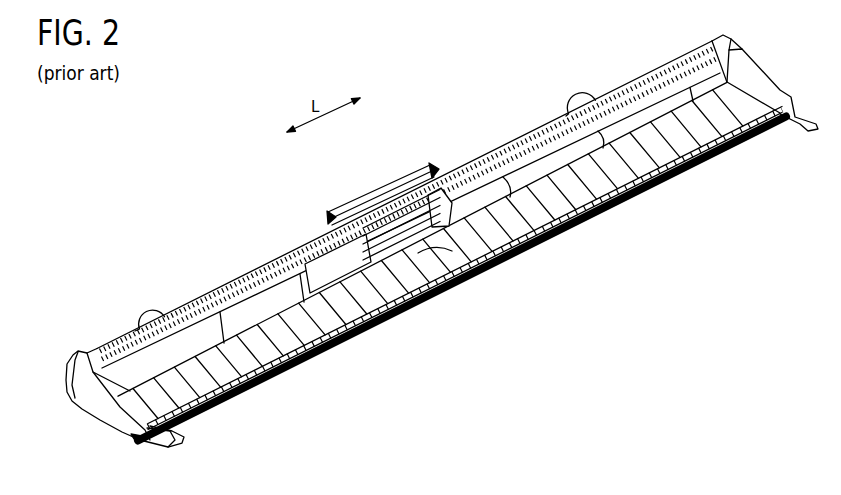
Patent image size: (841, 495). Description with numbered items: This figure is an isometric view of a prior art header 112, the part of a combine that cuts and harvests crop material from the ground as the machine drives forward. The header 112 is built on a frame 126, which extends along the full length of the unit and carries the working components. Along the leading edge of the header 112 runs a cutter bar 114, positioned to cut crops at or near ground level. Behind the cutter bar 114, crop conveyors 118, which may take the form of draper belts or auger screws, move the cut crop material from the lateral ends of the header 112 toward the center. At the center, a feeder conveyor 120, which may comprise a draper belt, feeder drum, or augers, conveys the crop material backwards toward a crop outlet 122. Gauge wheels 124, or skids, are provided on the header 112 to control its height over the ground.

The header 112 is at (206, 185).
The cutter bar 114 is at (597, 226).
The crop conveyor 118 is at (675, 155).
The feeder conveyor 120 is at (455, 256).
The crop outlet 122 is at (408, 214).
The gauge wheel 124 is at (146, 316).
The frame 126 is at (328, 236).